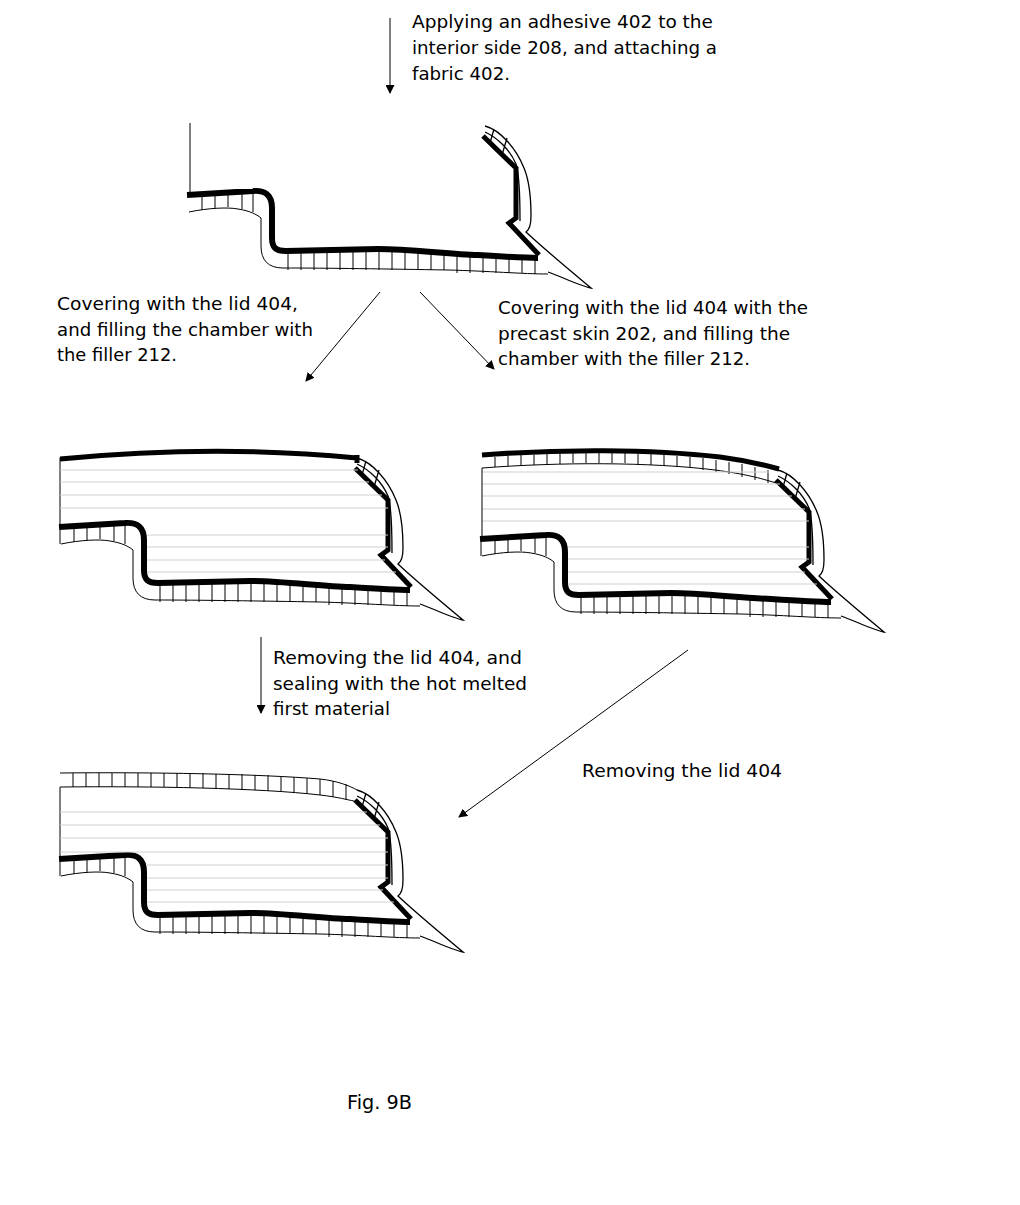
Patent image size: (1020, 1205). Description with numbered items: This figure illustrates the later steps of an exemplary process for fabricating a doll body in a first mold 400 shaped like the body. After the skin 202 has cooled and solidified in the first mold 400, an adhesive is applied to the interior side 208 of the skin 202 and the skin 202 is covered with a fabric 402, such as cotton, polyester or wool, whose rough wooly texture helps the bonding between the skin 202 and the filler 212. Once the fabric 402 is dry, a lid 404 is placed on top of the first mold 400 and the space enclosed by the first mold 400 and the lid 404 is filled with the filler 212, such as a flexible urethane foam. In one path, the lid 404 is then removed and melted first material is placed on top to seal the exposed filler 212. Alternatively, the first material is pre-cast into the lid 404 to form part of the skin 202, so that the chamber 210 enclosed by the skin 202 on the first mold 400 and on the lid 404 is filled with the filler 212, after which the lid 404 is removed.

The skin 202 is at (518, 176).
The interior side 208 is at (382, 247).
The chamber 210 is at (503, 505).
The filler 212 is at (277, 470).
The first mold 400 is at (527, 183).
The fabric 402 is at (266, 199).
The lid 404 is at (162, 453).